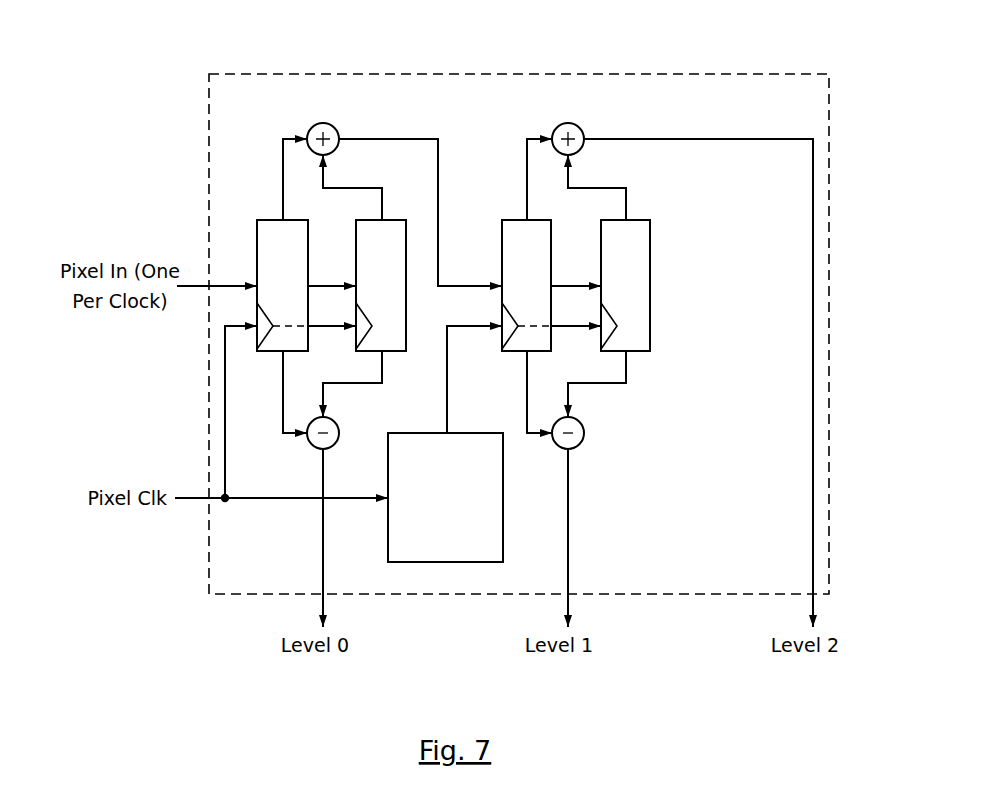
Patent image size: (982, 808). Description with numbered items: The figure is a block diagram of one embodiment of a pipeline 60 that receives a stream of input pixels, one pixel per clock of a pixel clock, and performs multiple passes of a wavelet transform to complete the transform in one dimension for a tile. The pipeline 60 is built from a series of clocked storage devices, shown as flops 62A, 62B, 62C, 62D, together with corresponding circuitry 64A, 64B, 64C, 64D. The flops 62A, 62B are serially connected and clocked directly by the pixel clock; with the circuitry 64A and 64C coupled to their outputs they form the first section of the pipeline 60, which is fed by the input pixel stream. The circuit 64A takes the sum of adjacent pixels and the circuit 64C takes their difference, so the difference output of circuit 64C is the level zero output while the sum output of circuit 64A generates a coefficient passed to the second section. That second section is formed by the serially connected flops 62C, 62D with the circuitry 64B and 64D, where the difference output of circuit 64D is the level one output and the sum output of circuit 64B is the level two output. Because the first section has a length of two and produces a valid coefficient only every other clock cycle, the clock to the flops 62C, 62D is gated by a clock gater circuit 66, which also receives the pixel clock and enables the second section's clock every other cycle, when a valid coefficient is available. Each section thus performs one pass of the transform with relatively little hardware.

The pipeline 60 is at (519, 334).
The flop 62A is at (282, 285).
The flop 62B is at (381, 285).
The flop 62C is at (526, 285).
The flop 62D is at (625, 285).
The sum circuit 64A is at (334, 127).
The sum circuit 64B is at (579, 127).
The difference circuit 64C is at (337, 427).
The difference circuit 64D is at (582, 427).
The clock gater circuit 66 is at (445, 497).